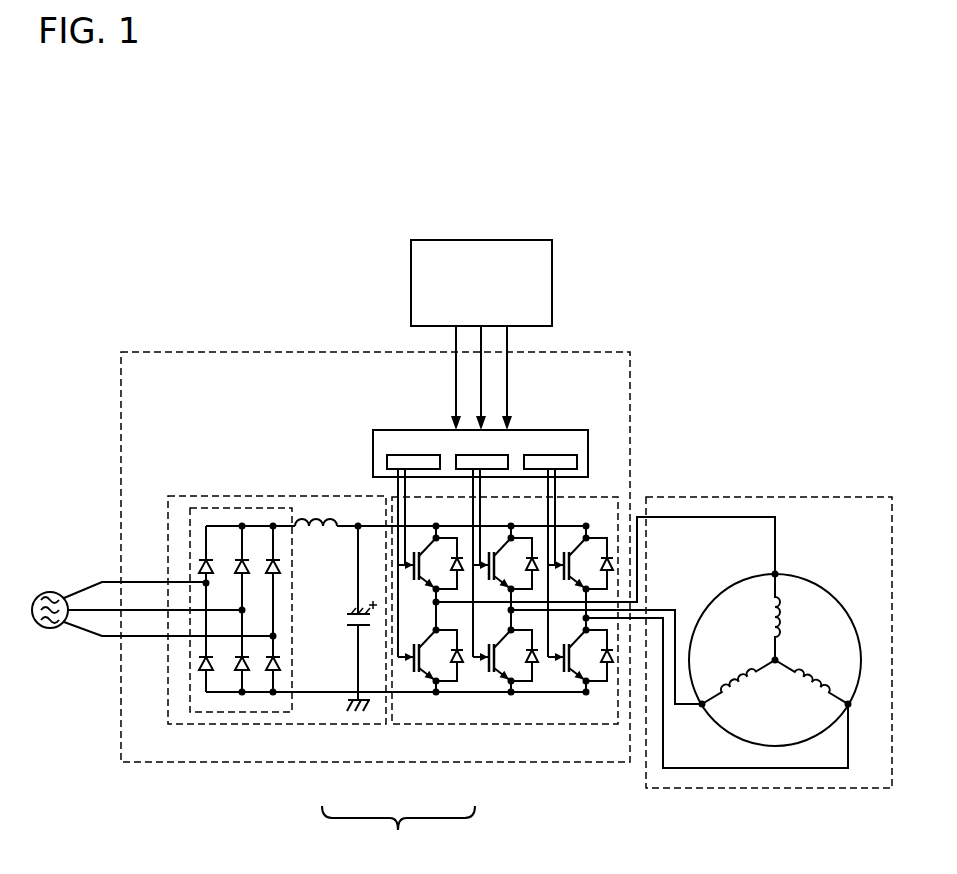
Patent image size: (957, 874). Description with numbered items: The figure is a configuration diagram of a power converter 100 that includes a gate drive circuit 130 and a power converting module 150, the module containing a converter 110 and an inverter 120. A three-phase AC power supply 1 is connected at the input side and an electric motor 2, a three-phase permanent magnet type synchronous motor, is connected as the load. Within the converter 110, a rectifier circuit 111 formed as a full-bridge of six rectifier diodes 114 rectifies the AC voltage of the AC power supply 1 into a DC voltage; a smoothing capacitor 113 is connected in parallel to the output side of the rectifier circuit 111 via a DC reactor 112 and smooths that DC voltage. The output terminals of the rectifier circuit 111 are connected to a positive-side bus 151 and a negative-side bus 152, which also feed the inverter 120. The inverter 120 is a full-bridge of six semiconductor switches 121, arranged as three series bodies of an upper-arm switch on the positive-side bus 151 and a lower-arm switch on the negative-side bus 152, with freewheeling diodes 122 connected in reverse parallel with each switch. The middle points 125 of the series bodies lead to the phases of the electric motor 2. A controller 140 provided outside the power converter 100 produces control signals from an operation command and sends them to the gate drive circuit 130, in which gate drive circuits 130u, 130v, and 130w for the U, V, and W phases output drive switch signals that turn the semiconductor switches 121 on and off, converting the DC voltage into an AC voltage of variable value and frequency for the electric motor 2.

The AC power supply 1 is at (46, 593).
The electric motor 2 is at (771, 497).
The power converter 100 is at (238, 352).
The converter 110 is at (330, 724).
The rectifier circuit 111 is at (233, 508).
The DC reactor 112 is at (304, 522).
The smoothing capacitor 113 is at (355, 613).
The rectifier diode 114 is at (204, 558).
The inverter 120 is at (445, 724).
The semiconductor switch 121 is at (421, 552).
The freewheeling diode 122 is at (605, 556).
The middle point 125 is at (434, 602).
The gate drive circuit 130 is at (482, 520).
The gate drive circuit for U phase 130u is at (387, 462).
The gate drive circuit for V phase 130v is at (497, 477).
The gate drive circuit for W phase 130w is at (577, 462).
The controller 140 is at (515, 240).
The power converting module 150 is at (508, 652).
The positive-side bus 151 is at (372, 524).
The negative-side bus 152 is at (315, 694).